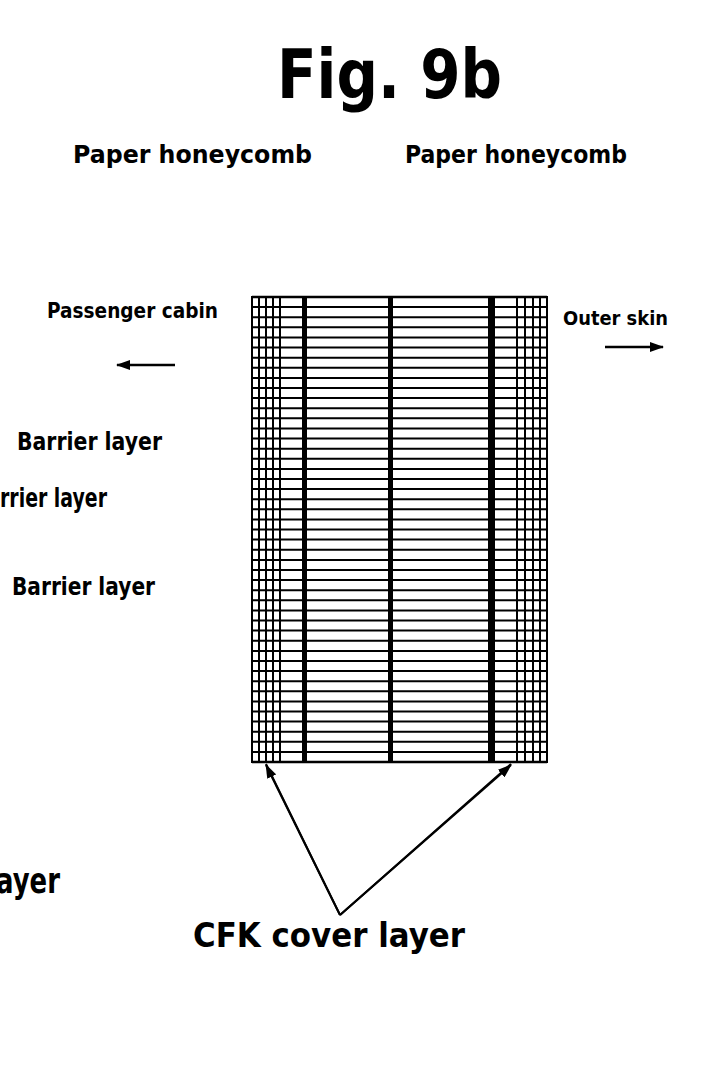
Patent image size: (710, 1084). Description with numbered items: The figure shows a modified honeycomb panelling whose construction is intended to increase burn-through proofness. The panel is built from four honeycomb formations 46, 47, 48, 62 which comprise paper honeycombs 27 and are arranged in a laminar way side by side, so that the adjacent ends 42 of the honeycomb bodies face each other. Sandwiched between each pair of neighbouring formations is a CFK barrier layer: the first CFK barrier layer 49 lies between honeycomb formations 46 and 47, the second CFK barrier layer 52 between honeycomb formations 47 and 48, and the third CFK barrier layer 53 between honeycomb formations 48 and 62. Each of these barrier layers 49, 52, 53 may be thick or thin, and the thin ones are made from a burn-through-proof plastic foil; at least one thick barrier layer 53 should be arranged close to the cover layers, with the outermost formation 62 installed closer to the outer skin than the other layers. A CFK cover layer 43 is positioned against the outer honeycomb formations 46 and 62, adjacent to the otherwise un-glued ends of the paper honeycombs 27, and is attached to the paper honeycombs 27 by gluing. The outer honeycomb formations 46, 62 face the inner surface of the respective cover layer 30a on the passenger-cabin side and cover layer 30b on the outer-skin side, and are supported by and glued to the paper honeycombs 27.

The paper honeycombs 27 is at (361, 329).
The cover layer 30a is at (262, 664).
The cover layer 30b is at (540, 624).
The adjacent ends of the honeycomb body 42 is at (512, 503).
The CFK cover layer 43 is at (395, 530).
The honeycomb formation 46 is at (294, 764).
The honeycomb formation 47 is at (354, 764).
The honeycomb formation 48 is at (417, 296).
The first CFK barrier layer 49 is at (297, 558).
The second CFK barrier layer 52 is at (382, 517).
The third CFK barrier layer 53 is at (488, 687).
The honeycomb formation 62 is at (516, 296).